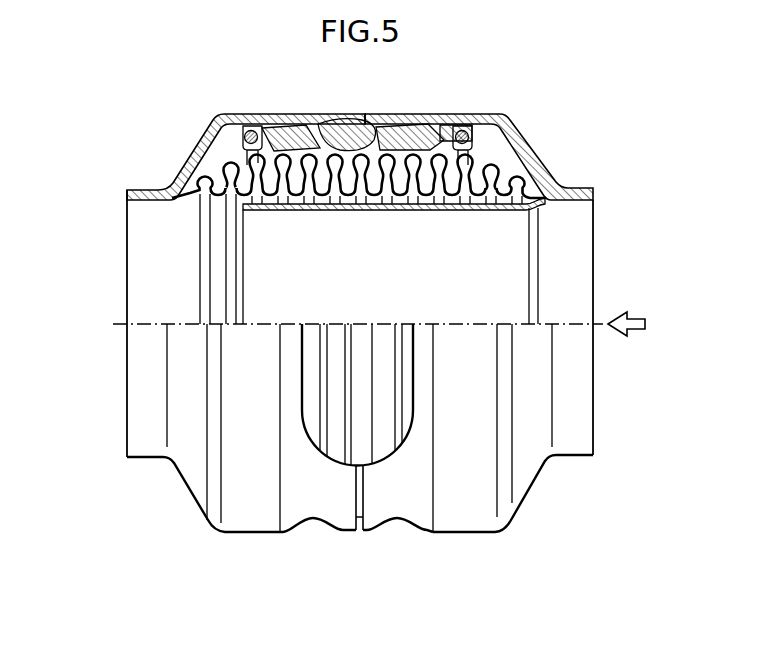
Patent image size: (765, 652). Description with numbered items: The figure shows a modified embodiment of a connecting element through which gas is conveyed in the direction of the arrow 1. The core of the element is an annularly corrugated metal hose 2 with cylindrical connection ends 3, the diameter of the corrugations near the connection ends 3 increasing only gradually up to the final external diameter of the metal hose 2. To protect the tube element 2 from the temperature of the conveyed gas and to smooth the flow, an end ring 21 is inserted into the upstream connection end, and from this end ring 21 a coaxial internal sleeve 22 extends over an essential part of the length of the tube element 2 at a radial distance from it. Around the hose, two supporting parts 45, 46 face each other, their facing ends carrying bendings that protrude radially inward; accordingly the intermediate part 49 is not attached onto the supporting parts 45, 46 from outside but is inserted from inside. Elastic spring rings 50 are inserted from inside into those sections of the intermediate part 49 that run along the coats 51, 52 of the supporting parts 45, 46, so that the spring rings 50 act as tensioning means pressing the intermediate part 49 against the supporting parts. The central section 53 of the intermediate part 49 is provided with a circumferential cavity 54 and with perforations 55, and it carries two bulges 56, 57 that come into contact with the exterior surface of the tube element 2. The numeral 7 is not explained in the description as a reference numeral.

The arrow 1 is at (640, 317).
The annularly corrugated metal hose 2 is at (514, 185).
The cylindrical connection ends 3 is at (152, 227).
The outer casing 7 is at (578, 427).
The end ring 21 is at (573, 233).
The internal sleeve 22 is at (262, 288).
The supporting part 45 is at (190, 155).
The supporting part 46 is at (540, 165).
The intermediate part 49 is at (470, 137).
The elastic spring rings 50 is at (256, 136).
The coat 51 is at (241, 512).
The coat 52 is at (460, 505).
The central section 53 is at (340, 130).
The circumferential cavity 54 is at (360, 520).
The perforations 55 is at (337, 463).
The bulge 56 is at (320, 128).
The bulge 57 is at (397, 138).